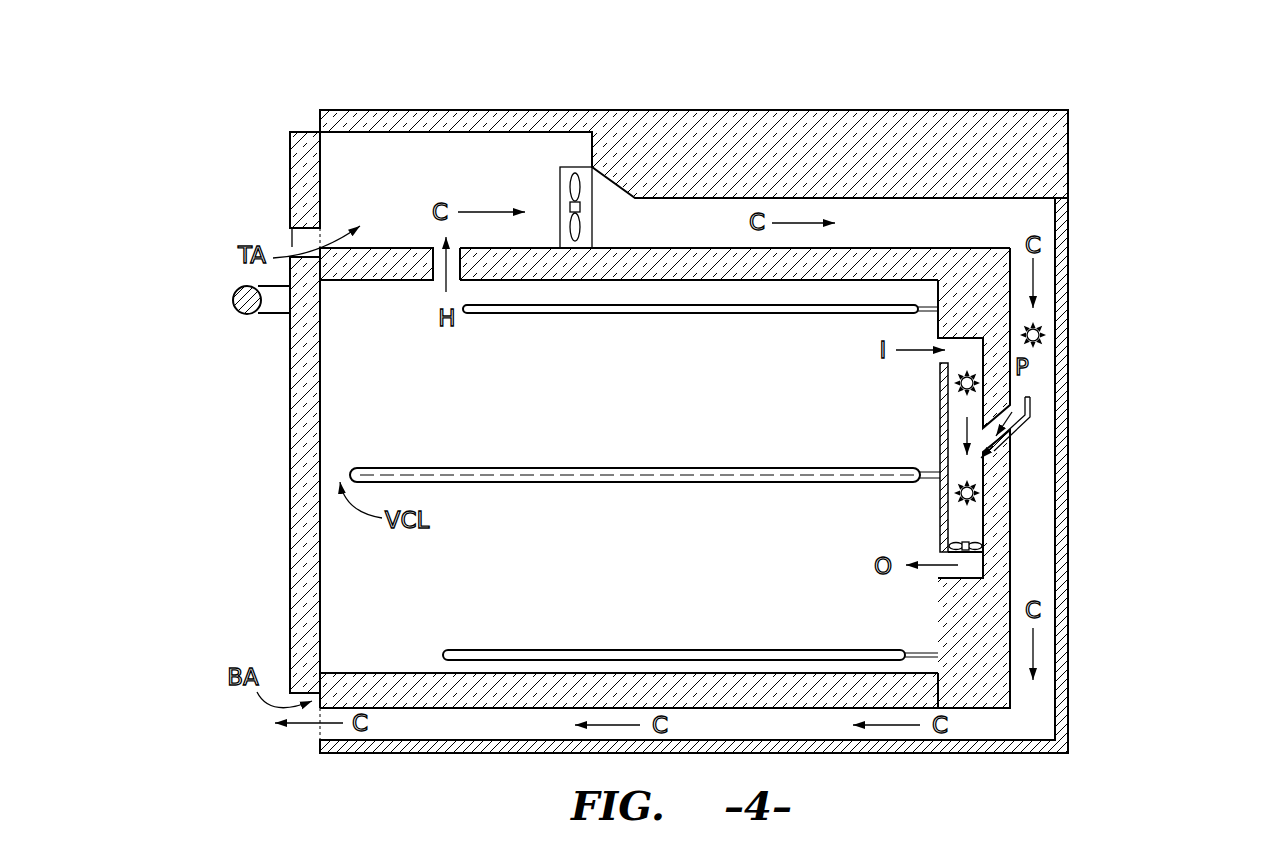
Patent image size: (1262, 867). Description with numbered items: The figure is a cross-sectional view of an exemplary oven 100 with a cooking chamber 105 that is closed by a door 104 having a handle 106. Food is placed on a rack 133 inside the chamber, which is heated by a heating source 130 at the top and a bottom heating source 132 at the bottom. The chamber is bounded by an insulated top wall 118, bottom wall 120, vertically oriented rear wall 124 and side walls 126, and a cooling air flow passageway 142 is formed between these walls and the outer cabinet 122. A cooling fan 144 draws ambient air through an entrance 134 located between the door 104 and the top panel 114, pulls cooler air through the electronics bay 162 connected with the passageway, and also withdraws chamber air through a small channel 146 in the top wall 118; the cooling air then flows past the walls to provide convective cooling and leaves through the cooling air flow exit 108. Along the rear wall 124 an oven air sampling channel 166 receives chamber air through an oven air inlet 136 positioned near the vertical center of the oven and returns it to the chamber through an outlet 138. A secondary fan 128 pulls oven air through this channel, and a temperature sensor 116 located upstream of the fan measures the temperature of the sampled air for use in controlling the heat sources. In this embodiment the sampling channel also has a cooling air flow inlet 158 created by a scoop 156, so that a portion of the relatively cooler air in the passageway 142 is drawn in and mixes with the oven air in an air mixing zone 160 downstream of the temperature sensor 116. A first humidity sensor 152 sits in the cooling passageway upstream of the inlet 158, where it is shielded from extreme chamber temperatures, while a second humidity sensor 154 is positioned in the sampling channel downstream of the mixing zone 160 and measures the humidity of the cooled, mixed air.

The oven 100 is at (1145, 215).
The door 104 is at (307, 353).
The cooking chamber 105 is at (355, 576).
The handle 106 is at (240, 301).
The cooling air flow exit 108 is at (308, 738).
The top panel 114 is at (302, 158).
The temperature sensor 116 is at (952, 378).
The top wall 118 is at (633, 262).
The bottom wall 120 is at (380, 690).
The cabinet 122 is at (815, 125).
The rear wall 124 is at (968, 268).
The side walls 126 is at (360, 413).
The secondary fan 128 is at (1000, 575).
The heating source 130 is at (672, 313).
The bottom heating source 132 is at (598, 650).
The rack 133 is at (530, 468).
The entrance 134 is at (287, 247).
The oven air inlet 136 is at (925, 338).
The outlet 138 is at (931, 573).
The cooling air flow passageway 142 is at (1022, 218).
The cooling fan 144 is at (573, 190).
The channel 146 is at (437, 288).
The first humidity sensor 152 is at (1046, 330).
The second humidity sensor 154 is at (952, 492).
The scoop 156 is at (1025, 433).
The cooling air flow inlet 158 is at (1034, 383).
The air mixing zone 160 is at (995, 465).
The electronics bay 162 is at (425, 143).
The oven air sampling channel 166 is at (962, 468).